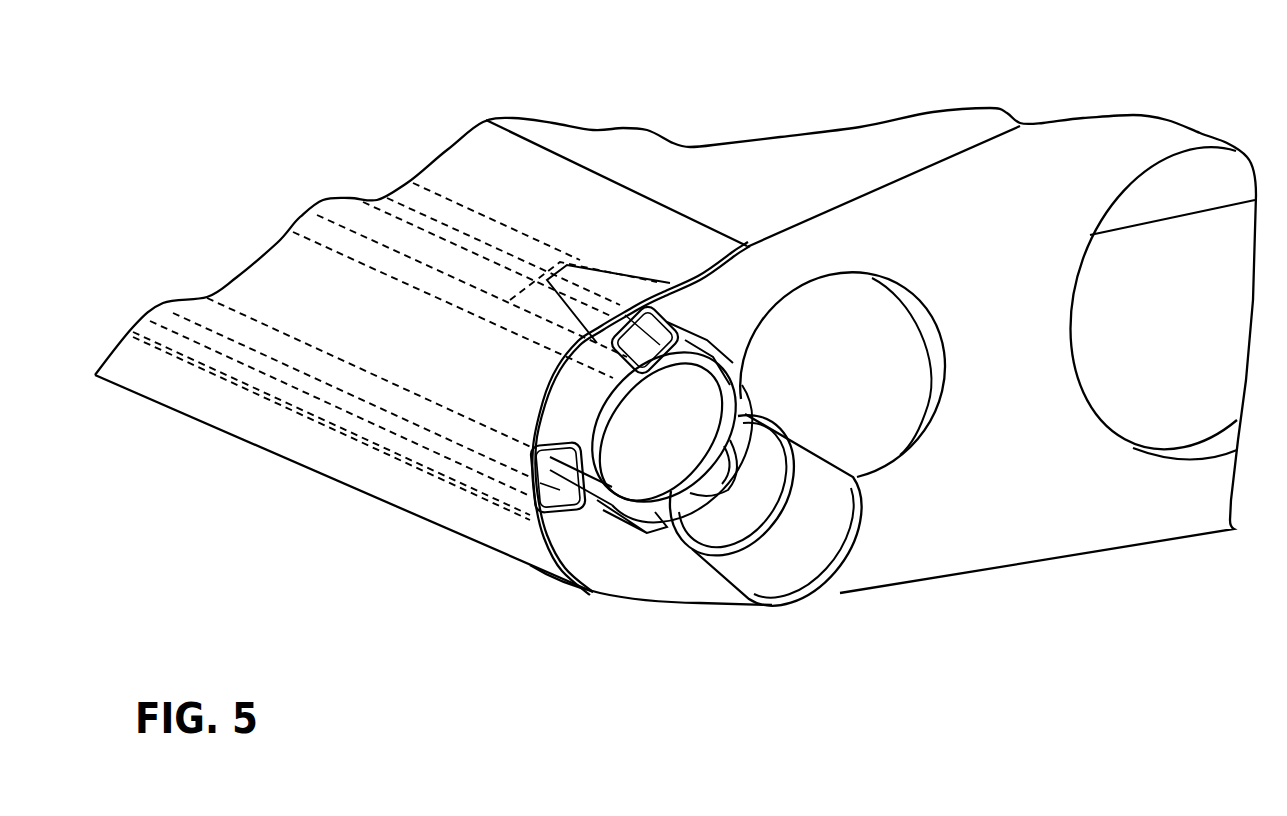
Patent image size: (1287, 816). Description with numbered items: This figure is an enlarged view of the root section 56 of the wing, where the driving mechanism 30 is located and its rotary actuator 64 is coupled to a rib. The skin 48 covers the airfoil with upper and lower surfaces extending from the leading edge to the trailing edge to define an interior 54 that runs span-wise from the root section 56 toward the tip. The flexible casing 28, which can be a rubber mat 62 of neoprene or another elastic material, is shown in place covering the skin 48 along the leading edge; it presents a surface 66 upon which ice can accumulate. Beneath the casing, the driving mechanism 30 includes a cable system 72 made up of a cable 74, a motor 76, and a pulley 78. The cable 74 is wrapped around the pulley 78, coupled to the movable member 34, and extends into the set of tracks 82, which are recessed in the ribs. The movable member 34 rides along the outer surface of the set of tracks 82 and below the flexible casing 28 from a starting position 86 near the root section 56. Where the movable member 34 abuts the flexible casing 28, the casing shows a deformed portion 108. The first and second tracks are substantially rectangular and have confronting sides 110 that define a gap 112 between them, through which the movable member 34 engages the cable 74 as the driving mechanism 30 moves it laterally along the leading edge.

The flexible casing 28 is at (443, 187).
The driving mechanism 30 is at (710, 615).
The movable member 34 is at (645, 258).
The skin 48 is at (839, 186).
The interior 54 is at (853, 377).
The root section 56 is at (1048, 515).
The rubber mat 62 is at (746, 246).
The rotary actuator 64 is at (787, 556).
The surface 66 is at (344, 291).
The cable system 72 is at (565, 575).
The cable 74 is at (597, 498).
The motor 76 is at (858, 560).
The pulley 78 is at (673, 427).
The set of tracks 82 is at (700, 347).
The starting position 86 is at (527, 358).
The deformed portion 108 is at (607, 285).
The confronting sides 110 is at (645, 320).
The gap 112 is at (655, 300).